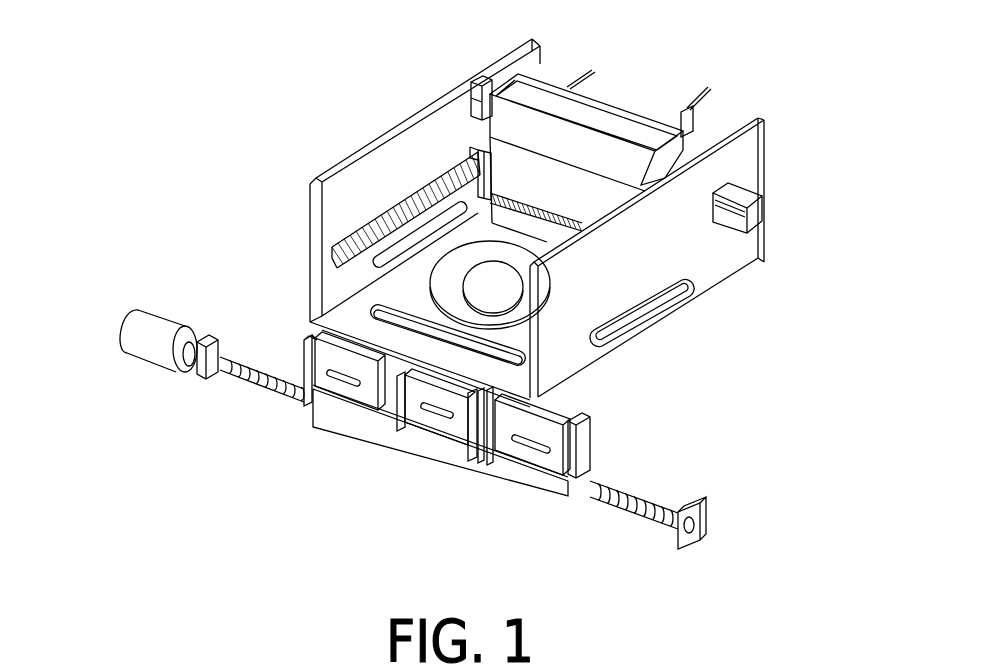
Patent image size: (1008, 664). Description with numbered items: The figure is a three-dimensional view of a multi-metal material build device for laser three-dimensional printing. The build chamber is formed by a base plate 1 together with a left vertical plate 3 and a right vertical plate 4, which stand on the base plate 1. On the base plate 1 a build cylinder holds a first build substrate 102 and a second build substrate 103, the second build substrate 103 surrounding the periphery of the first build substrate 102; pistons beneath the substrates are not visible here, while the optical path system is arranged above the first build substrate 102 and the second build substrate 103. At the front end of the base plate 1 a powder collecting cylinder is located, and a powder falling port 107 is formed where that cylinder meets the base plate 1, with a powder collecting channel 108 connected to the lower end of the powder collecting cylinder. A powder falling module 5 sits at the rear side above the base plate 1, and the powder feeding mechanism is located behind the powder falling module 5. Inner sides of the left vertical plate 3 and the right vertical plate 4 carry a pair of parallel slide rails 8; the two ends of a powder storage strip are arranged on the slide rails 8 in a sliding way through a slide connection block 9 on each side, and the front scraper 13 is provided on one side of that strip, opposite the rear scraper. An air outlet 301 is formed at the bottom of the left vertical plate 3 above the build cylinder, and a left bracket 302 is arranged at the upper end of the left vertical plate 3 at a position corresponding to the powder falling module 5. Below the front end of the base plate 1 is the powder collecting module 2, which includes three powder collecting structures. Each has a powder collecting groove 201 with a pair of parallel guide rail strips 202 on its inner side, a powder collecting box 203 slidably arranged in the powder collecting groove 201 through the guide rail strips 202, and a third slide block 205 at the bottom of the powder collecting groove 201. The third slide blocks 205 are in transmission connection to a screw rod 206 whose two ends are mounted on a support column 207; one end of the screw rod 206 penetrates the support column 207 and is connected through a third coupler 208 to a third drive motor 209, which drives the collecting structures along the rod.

The base plate 1 is at (353, 310).
The first build substrate 102 is at (480, 393).
The second build substrate 103 is at (450, 303).
The powder falling port 107 is at (390, 312).
The powder collecting channel 108 is at (500, 297).
The powder collecting module 2 is at (397, 450).
The powder collecting groove 201 is at (307, 328).
The guide rail strip 202 is at (573, 452).
The powder collecting box 203 is at (315, 352).
The third slide block 205 is at (457, 463).
The screw rod 206 is at (630, 510).
The support column 207 is at (705, 510).
The third coupler 208 is at (187, 357).
The third drive motor 209 is at (133, 315).
The left vertical plate 3 is at (402, 137).
The air outlet 301 is at (427, 225).
The left bracket 302 is at (470, 98).
The right vertical plate 4 is at (712, 260).
The powder falling module 5 is at (603, 173).
The slide rail 8 is at (375, 227).
The slide connection block 9 is at (477, 170).
The front scraper 13 is at (548, 240).